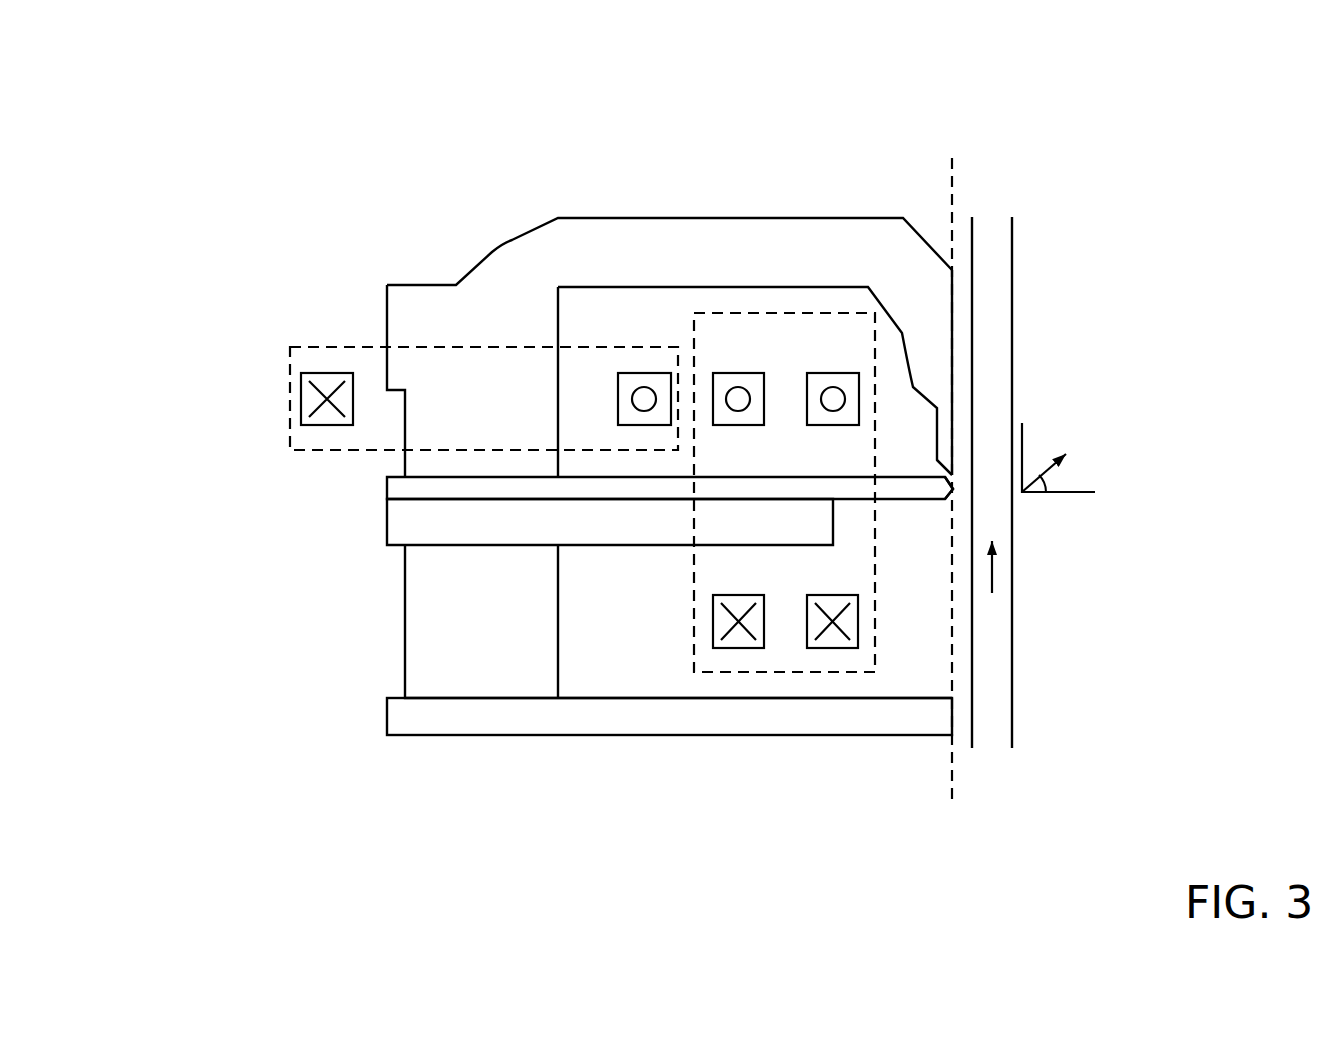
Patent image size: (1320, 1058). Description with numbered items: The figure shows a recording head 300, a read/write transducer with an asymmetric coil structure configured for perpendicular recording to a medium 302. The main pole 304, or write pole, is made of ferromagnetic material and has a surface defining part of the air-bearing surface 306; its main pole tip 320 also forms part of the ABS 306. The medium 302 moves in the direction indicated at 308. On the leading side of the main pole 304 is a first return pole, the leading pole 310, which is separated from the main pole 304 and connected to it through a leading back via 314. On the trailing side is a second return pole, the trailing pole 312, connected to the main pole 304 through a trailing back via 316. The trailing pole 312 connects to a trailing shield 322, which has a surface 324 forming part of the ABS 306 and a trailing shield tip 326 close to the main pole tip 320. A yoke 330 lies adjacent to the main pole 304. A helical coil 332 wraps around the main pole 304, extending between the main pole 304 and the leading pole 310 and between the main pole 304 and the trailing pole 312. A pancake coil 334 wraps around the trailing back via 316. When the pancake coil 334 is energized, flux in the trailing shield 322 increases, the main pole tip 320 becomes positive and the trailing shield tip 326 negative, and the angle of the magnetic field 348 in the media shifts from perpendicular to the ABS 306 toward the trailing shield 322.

The recording head 300 is at (193, 110).
The medium 302 is at (1000, 268).
The main pole 304 is at (387, 493).
The air-bearing surface 306 is at (956, 210).
The movement of the recording medium 308 is at (1000, 574).
The leading pole 310 is at (387, 715).
The trailing pole 312 is at (512, 240).
The leading back via 314 is at (403, 602).
The trailing back via 316 is at (466, 314).
The main pole tip 320 is at (953, 490).
The trailing shield 322 is at (926, 334).
The surface 324 is at (953, 368).
The trailing shield tip 326 is at (953, 475).
The yoke 330 is at (387, 537).
The helical coil 332 is at (805, 298).
The pancake coil 334 is at (578, 336).
The magnetic field 348 is at (1055, 501).